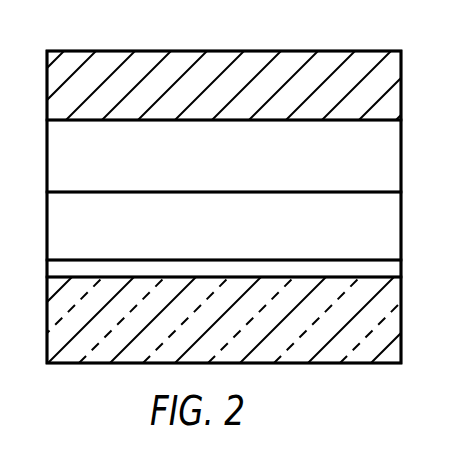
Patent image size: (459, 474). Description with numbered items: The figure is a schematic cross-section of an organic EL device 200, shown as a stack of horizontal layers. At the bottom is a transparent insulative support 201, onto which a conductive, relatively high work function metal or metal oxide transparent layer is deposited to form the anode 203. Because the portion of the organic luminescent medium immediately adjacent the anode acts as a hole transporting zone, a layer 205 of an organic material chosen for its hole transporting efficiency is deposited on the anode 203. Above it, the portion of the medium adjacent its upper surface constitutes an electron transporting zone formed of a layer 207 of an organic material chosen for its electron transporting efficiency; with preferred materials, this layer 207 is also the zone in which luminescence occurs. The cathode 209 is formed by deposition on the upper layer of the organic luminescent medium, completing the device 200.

The organic EL device 200 is at (163, 37).
The cathode 209 is at (402, 97).
The electron transporting layer 207 is at (401, 170).
The hole transporting layer 205 is at (401, 238).
The anode 203 is at (401, 273).
The transparent insulative support 201 is at (401, 325).